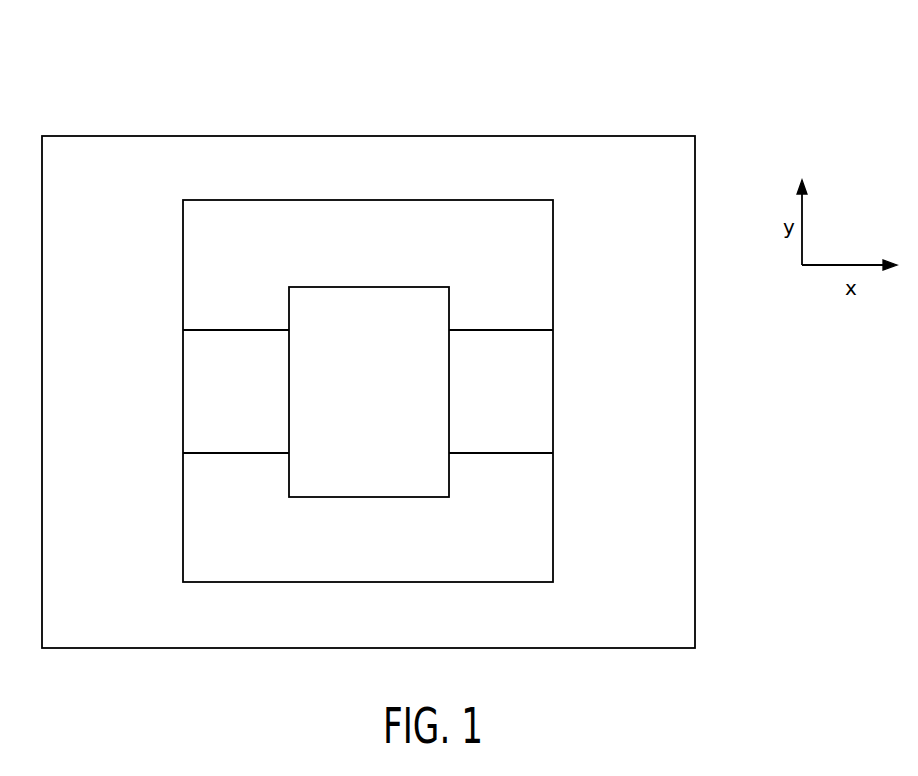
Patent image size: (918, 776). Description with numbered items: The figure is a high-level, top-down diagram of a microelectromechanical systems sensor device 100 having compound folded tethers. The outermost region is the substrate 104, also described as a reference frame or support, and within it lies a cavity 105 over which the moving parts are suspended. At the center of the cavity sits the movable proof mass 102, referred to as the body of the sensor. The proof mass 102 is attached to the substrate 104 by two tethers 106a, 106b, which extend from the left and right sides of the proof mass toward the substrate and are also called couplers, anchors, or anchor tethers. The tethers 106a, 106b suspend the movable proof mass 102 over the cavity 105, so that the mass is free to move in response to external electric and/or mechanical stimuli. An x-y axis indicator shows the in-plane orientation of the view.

The MEMS sensor device 100 is at (90, 94).
The movable proof mass 102 is at (383, 402).
The substrate 104 is at (92, 181).
The cavity 105 is at (250, 562).
The tether 106a is at (255, 402).
The tether 106b is at (520, 402).